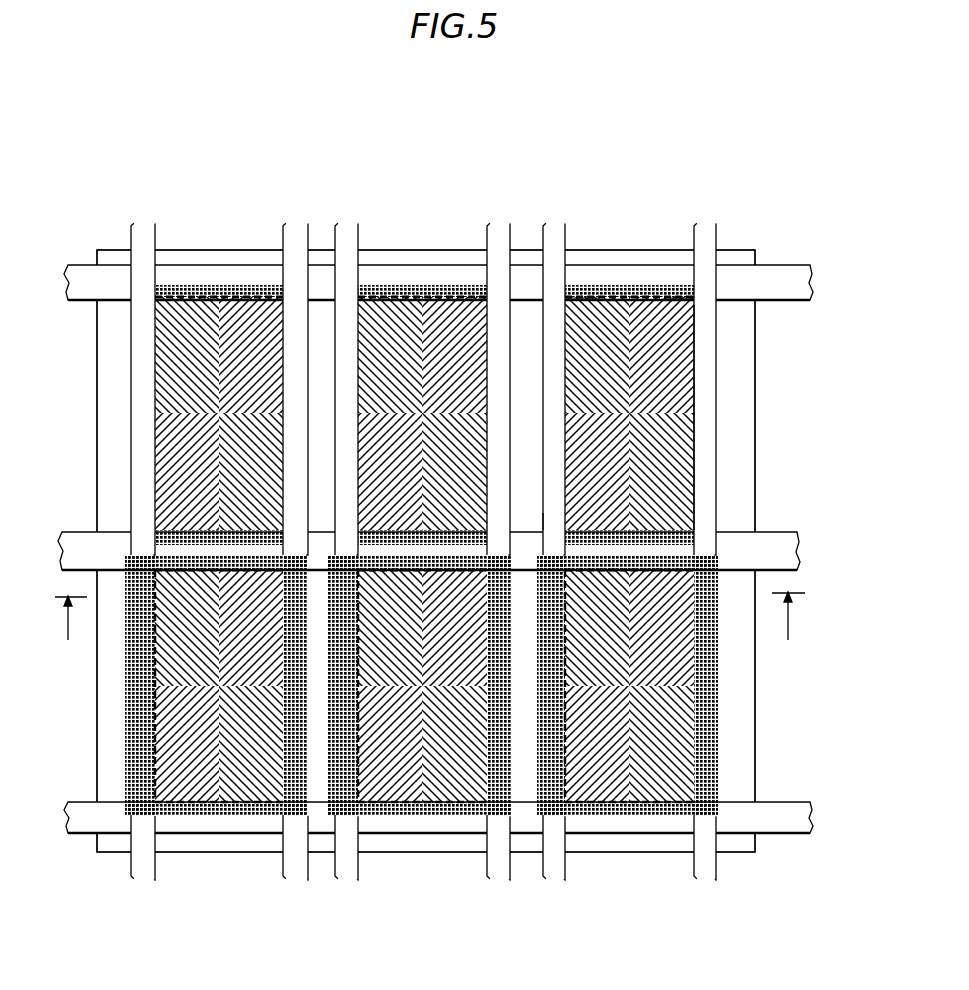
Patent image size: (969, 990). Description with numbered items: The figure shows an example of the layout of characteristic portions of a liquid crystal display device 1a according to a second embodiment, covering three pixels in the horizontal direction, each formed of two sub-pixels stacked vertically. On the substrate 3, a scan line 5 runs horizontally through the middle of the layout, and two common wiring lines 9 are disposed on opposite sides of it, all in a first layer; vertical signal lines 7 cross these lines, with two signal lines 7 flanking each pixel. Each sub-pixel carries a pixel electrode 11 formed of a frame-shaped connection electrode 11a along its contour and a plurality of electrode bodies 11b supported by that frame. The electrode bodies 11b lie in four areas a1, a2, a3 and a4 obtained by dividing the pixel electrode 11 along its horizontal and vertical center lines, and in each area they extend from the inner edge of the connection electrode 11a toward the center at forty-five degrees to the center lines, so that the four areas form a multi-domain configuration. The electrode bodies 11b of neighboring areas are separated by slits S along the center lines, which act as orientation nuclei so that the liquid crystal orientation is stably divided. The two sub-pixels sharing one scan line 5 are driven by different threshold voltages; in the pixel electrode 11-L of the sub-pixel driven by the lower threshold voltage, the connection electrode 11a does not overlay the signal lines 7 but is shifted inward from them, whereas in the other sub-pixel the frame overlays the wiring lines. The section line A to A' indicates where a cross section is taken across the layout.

The liquid crystal display device 1a is at (158, 167).
The substrate 3 is at (740, 855).
The scan line 5 is at (800, 562).
The signal line 7 is at (143, 882).
The common wiring line 9 is at (810, 263).
The pixel electrode 11 is at (208, 812).
The pixel electrode 11-L is at (222, 285).
The connection electrode 11a is at (694, 477).
The electrode body 11b is at (675, 321).
The slit S is at (630, 296).
The area a1 is at (666, 312).
The area a2 is at (713, 518).
The area a3 is at (585, 480).
The area a4 is at (585, 312).
The section line A is at (71, 633).
The section line A' is at (788, 631).